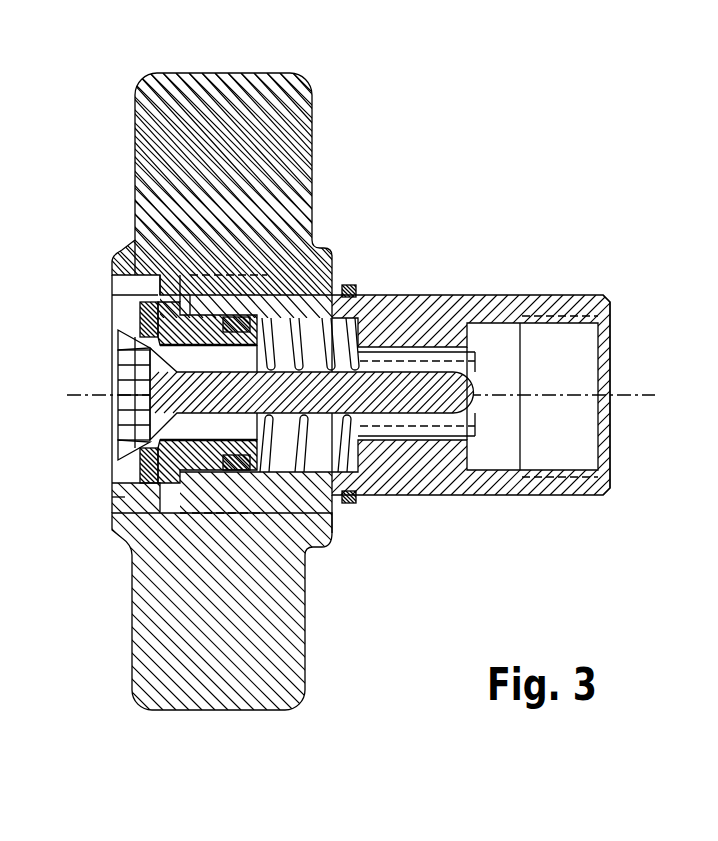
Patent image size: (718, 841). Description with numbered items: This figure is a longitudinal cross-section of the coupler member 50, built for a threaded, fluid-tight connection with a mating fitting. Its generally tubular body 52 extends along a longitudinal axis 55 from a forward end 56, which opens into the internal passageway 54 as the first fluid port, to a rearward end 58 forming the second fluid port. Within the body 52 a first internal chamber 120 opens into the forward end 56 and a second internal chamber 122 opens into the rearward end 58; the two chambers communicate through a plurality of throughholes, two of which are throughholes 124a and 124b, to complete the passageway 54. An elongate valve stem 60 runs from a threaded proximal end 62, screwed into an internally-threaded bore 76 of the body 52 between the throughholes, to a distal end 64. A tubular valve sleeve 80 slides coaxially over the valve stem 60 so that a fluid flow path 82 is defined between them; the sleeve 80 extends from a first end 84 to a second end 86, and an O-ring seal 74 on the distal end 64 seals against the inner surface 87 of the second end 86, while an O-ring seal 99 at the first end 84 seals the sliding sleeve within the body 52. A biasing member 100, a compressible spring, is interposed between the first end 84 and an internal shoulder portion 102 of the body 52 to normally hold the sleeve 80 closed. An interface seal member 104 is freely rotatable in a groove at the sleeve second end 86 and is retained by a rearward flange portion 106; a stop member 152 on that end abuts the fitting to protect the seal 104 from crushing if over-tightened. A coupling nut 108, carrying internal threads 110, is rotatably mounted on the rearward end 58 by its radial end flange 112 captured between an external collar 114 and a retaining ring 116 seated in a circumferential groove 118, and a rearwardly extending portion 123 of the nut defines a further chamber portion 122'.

The coupler member 50 is at (440, 115).
The tubular body 52 is at (540, 295).
The passageway 54 is at (497, 396).
The longitudinal axis 55 is at (643, 395).
The forward end 56 is at (608, 295).
The rearward end 58 is at (205, 295).
The valve stem 60 is at (112, 402).
The proximal end 62 is at (470, 387).
The distal end 64 is at (138, 320).
The O-ring seal 74 is at (112, 366).
The internally-threaded bore 76 is at (493, 295).
The valve sleeve 80 is at (190, 295).
The fluid flow path 82 is at (301, 394).
The first end 84 is at (345, 286).
The second end 86 is at (112, 245).
The inner surface 87 is at (112, 428).
The O-ring seal 99 is at (237, 300).
The biasing member 100 is at (335, 480).
The internal shoulder portion 102 is at (420, 462).
The interface seal member 104 is at (112, 482).
The rearward flange portion 106 is at (112, 455).
The coupling nut 108 is at (312, 97).
The internal threads 110 is at (237, 513).
The radial end flange 112 is at (332, 533).
The external collar 114 is at (267, 513).
The retaining ring 116 is at (357, 500).
The circumferential groove 118 is at (416, 348).
The first internal chamber 120 is at (560, 396).
The second internal chamber 122 is at (349, 586).
The second internal chamber portion 122' is at (122, 611).
The rearwardly extending portion 123 is at (152, 513).
The throughhole 124a is at (450, 348).
The throughhole 124b is at (472, 472).
The stop member 152 is at (112, 497).